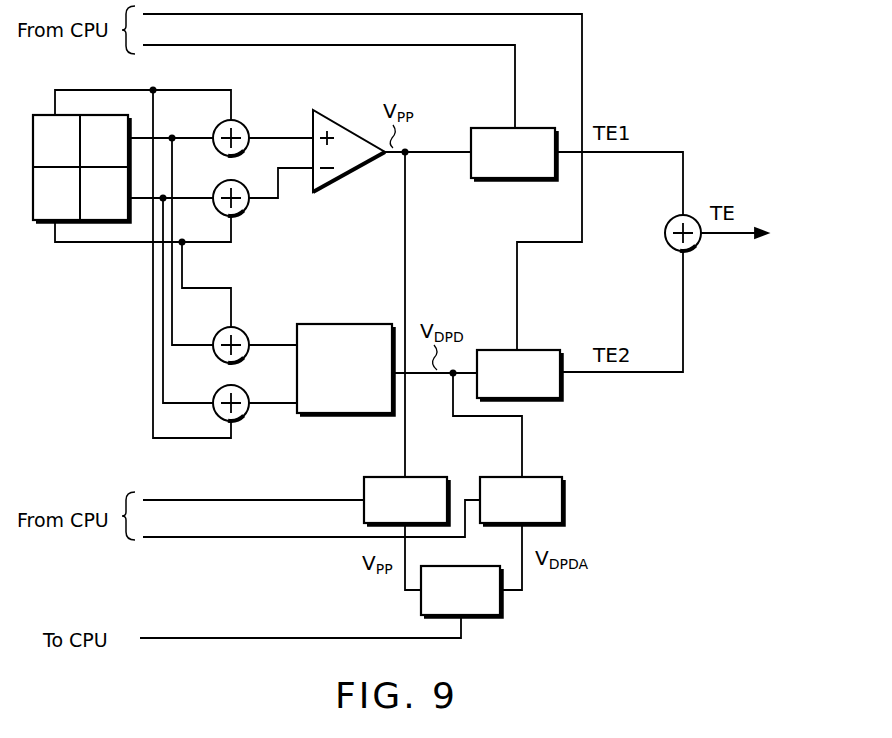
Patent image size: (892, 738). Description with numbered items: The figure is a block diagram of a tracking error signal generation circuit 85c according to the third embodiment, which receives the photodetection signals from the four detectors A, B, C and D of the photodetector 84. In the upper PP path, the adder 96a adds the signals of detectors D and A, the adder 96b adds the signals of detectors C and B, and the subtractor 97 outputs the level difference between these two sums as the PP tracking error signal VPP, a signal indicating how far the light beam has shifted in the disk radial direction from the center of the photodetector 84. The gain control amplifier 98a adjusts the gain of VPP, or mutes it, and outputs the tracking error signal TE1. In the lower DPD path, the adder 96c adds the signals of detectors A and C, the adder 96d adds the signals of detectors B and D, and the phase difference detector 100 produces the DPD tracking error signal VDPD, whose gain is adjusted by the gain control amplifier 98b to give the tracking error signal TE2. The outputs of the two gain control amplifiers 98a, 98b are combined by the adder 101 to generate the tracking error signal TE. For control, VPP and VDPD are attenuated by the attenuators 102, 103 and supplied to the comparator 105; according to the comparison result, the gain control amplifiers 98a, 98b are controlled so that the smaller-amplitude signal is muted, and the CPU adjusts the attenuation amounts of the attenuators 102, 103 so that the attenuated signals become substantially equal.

The photodetector 84 is at (40, 238).
The tracking error signal generation circuit 85c is at (473, 232).
The adder 96a is at (245, 123).
The adder 96b is at (246, 212).
The adder 96c is at (245, 330).
The adder 96d is at (240, 425).
The subtractor 97 is at (348, 177).
The gain control amplifier 98a is at (548, 128).
The gain control amplifier 98b is at (541, 350).
The phase difference detector 100 is at (353, 322).
The adder 101 is at (695, 252).
The attenuator 102 is at (437, 476).
The attenuator 103 is at (565, 500).
The comparator 105 is at (503, 605).